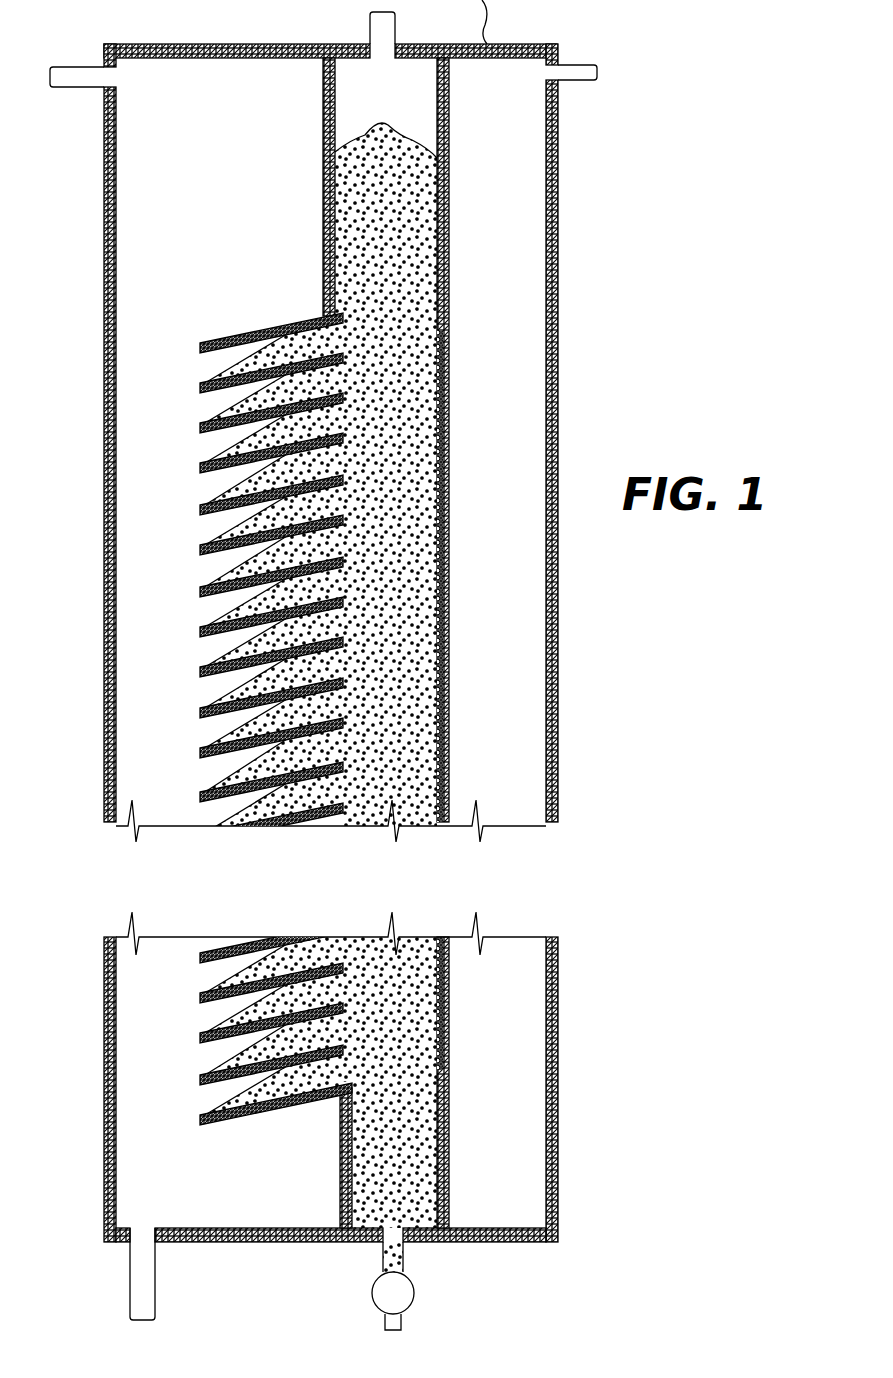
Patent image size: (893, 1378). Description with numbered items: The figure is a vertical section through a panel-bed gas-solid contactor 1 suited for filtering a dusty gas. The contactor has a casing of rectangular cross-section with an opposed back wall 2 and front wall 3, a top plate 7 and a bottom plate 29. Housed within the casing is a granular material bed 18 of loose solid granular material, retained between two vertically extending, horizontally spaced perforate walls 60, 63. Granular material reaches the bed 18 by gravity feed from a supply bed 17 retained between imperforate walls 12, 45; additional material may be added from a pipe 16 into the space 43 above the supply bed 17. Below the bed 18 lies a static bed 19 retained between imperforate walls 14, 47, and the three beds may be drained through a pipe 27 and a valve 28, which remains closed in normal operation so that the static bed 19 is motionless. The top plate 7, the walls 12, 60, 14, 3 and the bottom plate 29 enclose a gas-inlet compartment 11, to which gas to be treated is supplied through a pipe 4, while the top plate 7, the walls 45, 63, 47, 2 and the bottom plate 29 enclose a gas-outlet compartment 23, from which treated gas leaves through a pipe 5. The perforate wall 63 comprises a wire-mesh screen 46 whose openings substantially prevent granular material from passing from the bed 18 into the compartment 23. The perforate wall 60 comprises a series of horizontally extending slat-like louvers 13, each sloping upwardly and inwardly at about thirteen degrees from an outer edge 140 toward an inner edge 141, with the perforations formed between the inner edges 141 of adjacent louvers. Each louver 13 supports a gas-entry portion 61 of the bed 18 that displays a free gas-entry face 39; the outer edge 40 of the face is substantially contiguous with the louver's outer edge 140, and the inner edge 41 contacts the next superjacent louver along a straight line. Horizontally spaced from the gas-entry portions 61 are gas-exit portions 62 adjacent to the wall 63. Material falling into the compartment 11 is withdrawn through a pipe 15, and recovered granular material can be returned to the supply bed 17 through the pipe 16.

The panel-bed gas-solid contactor 1 is at (86, 606).
The back wall 2 is at (558, 378).
The front wall 3 is at (104, 282).
The pipe 4 is at (68, 90).
The pipe 5 is at (580, 66).
The top plate 7 is at (140, 44).
The gas-inlet compartment 11 is at (215, 165).
The imperforate wall 12 is at (323, 275).
The louver 13 is at (215, 392).
The imperforate wall 14 is at (340, 1165).
The pipe 15 is at (130, 1278).
The pipe 16 is at (372, 30).
The supply bed 17 is at (392, 237).
The granular material bed 18 is at (405, 570).
The static bed 19 is at (404, 1156).
The gas-outlet compartment 23 is at (505, 173).
The pipe 27 is at (405, 1262).
The valve 28 is at (414, 1295).
The bottom plate 29 is at (270, 1243).
The free gas-entry face 39 is at (212, 495).
The outer edge of face 40 is at (205, 542).
The inner edge of face 41 is at (283, 492).
The space 43 is at (375, 97).
The imperforate wall 45 is at (438, 228).
The wire-mesh screen 46 is at (438, 533).
The imperforate wall 47 is at (425, 1108).
The perforate wall 60 is at (193, 380).
The gas-entry portion 61 is at (292, 560).
The gas-exit portion 62 is at (428, 798).
The perforate wall 63 is at (435, 446).
The outer edge of louver 140 is at (205, 633).
The inner edge of louver 141 is at (352, 612).